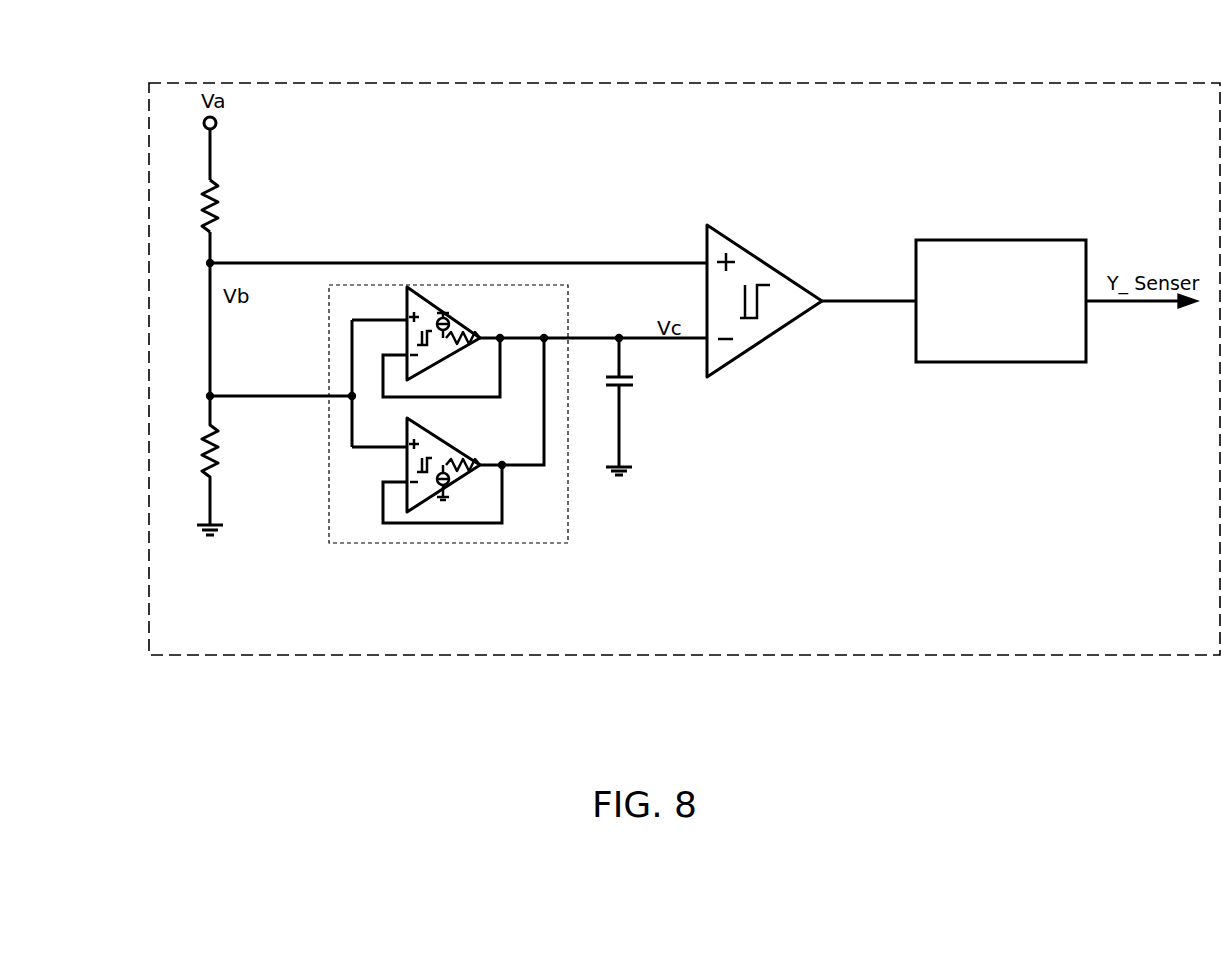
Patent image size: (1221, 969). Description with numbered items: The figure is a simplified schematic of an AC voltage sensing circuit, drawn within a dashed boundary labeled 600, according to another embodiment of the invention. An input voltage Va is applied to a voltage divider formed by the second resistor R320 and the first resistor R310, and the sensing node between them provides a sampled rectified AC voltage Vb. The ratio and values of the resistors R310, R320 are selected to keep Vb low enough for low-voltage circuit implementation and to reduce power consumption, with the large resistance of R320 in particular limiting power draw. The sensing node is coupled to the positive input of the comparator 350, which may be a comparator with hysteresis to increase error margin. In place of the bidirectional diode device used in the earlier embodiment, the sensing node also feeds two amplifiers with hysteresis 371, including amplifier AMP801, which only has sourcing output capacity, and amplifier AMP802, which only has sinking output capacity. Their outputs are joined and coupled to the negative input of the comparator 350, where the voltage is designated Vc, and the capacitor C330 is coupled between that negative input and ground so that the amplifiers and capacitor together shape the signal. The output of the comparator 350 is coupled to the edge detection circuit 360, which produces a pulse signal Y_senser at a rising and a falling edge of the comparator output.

The sensing circuit 600 is at (700, 82).
The comparator 350 is at (708, 225).
The edge detection circuit 360 is at (996, 240).
The two amplifiers with hysteresis 371 is at (455, 545).
The second resistor R320 is at (243, 206).
The first resistor R310 is at (243, 460).
The capacitor C330 is at (652, 406).
The amplifier AMP801 is at (457, 342).
The amplifier AMP802 is at (457, 470).